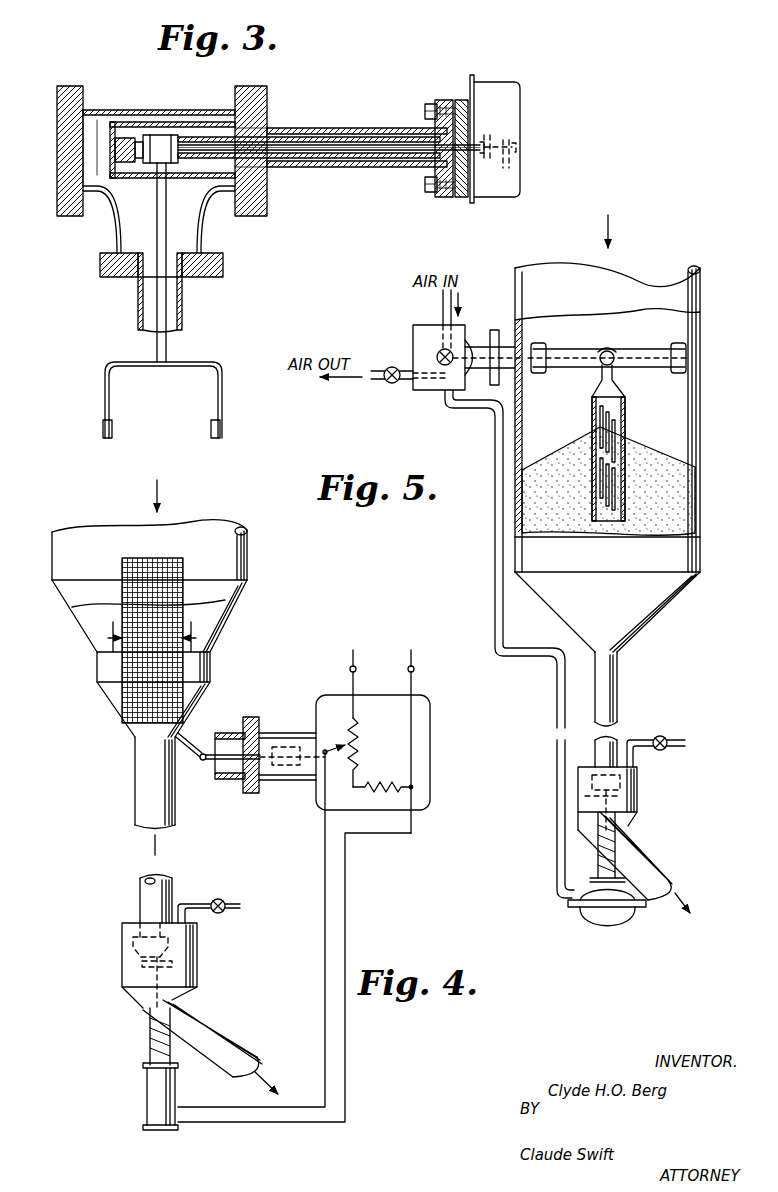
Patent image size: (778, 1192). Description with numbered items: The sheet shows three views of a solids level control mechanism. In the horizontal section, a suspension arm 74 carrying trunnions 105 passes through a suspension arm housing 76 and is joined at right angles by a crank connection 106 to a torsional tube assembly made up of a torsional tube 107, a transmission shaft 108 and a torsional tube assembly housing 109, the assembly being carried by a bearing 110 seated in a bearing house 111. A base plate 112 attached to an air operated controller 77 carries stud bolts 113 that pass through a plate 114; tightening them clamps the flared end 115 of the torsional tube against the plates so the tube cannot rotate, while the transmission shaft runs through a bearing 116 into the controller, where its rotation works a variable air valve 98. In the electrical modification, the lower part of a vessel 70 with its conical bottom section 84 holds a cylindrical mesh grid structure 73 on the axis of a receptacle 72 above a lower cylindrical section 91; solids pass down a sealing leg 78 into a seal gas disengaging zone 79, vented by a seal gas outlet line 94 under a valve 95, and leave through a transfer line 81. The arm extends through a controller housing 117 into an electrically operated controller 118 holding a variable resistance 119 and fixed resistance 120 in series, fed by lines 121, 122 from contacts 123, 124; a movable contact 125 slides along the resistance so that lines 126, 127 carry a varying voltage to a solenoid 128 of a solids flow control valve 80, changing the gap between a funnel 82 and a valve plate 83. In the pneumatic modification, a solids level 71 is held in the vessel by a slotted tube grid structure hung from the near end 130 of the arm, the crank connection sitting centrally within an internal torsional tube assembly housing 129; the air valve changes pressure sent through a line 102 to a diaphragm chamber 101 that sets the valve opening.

In FIG. 5, the vessel 70 is at (701, 298).
In FIG. 4, the vessel 70 is at (50, 550).
In FIG. 5, the solids level 71 is at (568, 452).
In FIG. 4, the receptacle 72 is at (133, 730).
In FIG. 5, the grid structure 73 is at (626, 416).
In FIG. 4, the grid structure 73 is at (185, 626).
In FIG. 3, the suspension arm 74 is at (168, 348).
In FIG. 4, the suspension arm 74 is at (192, 745).
In FIG. 3, the suspension arm housing 76 is at (183, 303).
In FIG. 5, the suspension arm housing 76 is at (506, 346).
In FIG. 4, the suspension arm housing 76 is at (235, 780).
In FIG. 3, the air operated controller 77 is at (522, 96).
In FIG. 5, the air operated controller 77 is at (412, 325).
In FIG. 5, the sealing leg 78 is at (618, 692).
In FIG. 4, the sealing leg 78 is at (138, 896).
In FIG. 5, the seal gas disengaging zone 79 is at (638, 775).
In FIG. 4, the seal gas disengaging zone 79 is at (122, 933).
In FIG. 5, the solids flow control valve 80 is at (622, 798).
In FIG. 4, the solids flow control valve 80 is at (140, 963).
In FIG. 5, the transfer line 81 is at (655, 850).
In FIG. 4, the transfer line 81 is at (232, 1036).
In FIG. 4, the funnel 82 is at (170, 953).
In FIG. 4, the valve plate 83 is at (174, 974).
In FIG. 5, the conical bottom section 84 is at (657, 612).
In FIG. 4, the conical bottom section 84 is at (62, 598).
In FIG. 4, the lower cylindrical section 91 is at (133, 790).
In FIG. 4, the seal gas outlet line 94 is at (188, 903).
In FIG. 4, the valve 95 is at (223, 899).
In FIG. 3, the variable air valve 98 is at (518, 141).
In FIG. 5, the variable air valve 98 is at (437, 354).
In FIG. 5, the diaphragm chamber 101 is at (570, 904).
In FIG. 5, the line 102 is at (481, 418).
In FIG. 3, the trunnions 105 is at (212, 430).
In FIG. 4, the trunnions 105 is at (200, 692).
In FIG. 3, the crank connection 106 is at (162, 132).
In FIG. 5, the crank connection 106 is at (616, 370).
In FIG. 3, the torsional tube 107 is at (293, 160).
In FIG. 3, the transmission shaft 108 is at (330, 152).
In FIG. 3, the torsional tube assembly housing 109 is at (337, 126).
In FIG. 3, the bearing 110 is at (122, 134).
In FIG. 3, the bearing house 111 is at (108, 152).
In FIG. 3, the base plate 112 is at (462, 198).
In FIG. 3, the stud bolts 113 is at (428, 105).
In FIG. 3, the plate 114 is at (444, 198).
In FIG. 3, the flared end 115 is at (440, 128).
In FIG. 3, the bearing 116 is at (486, 136).
In FIG. 5, the controller housing 117 is at (482, 375).
In FIG. 4, the controller housing 117 is at (282, 732).
In FIG. 4, the electrically operated controller 118 is at (430, 716).
In FIG. 4, the variable resistance 119 is at (362, 738).
In FIG. 4, the fixed resistance 120 is at (380, 782).
In FIG. 4, the line 121 is at (350, 676).
In FIG. 4, the line 122 is at (414, 679).
In FIG. 4, the contact 123 is at (353, 652).
In FIG. 4, the contact 124 is at (413, 652).
In FIG. 4, the movable contact 125 is at (342, 740).
In FIG. 4, the line 126 is at (323, 862).
In FIG. 4, the line 127 is at (347, 866).
In FIG. 4, the solenoid 128 is at (146, 1094).
In FIG. 5, the internal torsional tube assembly housing 129 is at (574, 346).
In FIG. 5, the end of suspension arm 130 is at (613, 353).